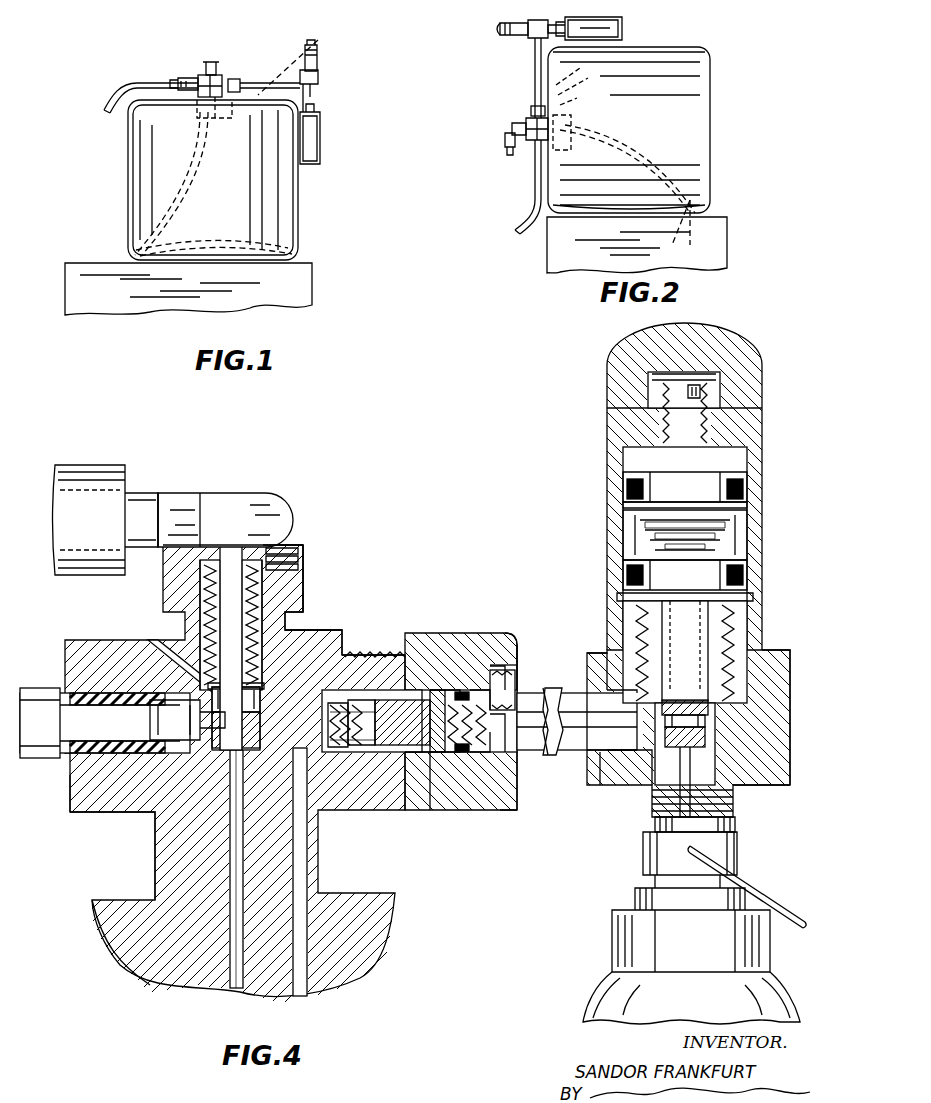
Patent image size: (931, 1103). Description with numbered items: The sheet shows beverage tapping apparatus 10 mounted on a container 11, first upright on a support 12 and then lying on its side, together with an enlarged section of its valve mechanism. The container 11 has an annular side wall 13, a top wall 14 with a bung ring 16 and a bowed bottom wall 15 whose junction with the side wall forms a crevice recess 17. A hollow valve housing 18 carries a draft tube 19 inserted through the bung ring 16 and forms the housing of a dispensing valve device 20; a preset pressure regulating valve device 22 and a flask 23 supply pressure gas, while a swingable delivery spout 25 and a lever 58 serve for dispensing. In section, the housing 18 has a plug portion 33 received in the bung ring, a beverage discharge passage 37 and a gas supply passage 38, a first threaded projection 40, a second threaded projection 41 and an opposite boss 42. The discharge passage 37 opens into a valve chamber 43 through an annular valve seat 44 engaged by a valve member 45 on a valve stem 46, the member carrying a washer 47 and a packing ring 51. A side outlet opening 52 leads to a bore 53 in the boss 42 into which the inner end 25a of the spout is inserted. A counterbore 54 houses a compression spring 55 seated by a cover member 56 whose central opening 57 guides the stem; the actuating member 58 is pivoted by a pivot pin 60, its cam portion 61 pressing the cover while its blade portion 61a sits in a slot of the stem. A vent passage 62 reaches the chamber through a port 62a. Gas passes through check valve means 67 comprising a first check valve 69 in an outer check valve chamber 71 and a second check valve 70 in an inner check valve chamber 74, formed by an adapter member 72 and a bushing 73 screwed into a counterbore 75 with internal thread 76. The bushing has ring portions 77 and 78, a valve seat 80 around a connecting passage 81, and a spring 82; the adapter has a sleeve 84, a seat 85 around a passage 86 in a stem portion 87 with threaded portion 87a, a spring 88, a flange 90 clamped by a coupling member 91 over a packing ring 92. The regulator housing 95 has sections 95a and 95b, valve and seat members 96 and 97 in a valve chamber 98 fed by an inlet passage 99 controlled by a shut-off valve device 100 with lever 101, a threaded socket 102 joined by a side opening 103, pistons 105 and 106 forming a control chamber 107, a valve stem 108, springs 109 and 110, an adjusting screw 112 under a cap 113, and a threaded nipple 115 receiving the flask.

In FIG. 1, the beverage tapping apparatus 10 is at (222, 76).
In FIG. 2, the beverage tapping apparatus 10 is at (527, 122).
In FIG. 4, the beverage tapping apparatus 10 is at (305, 552).
In FIG. 1, the container 11 is at (300, 182).
In FIG. 2, the container 11 is at (668, 50).
In FIG. 1, the support 12 is at (300, 278).
In FIG. 2, the support 12 is at (727, 240).
In FIG. 1, the annular side wall 13 is at (296, 210).
In FIG. 1, the top wall 14 is at (294, 55).
In FIG. 2, the top wall 14 is at (580, 79).
In FIG. 1, the bottom wall 15 is at (232, 250).
In FIG. 1, the bung ring 16 is at (233, 120).
In FIG. 2, the bung ring 16 is at (583, 96).
In FIG. 1, the crevice recess 17 is at (297, 232).
In FIG. 2, the crevice recess 17 is at (688, 229).
In FIG. 1, the valve housing 18 is at (240, 80).
In FIG. 2, the valve housing 18 is at (550, 148).
In FIG. 4, the valve housing 18 is at (362, 650).
In FIG. 1, the draft tube 19 is at (200, 178).
In FIG. 2, the draft tube 19 is at (633, 146).
In FIG. 1, the dispensing valve device 20 is at (199, 82).
In FIG. 2, the dispensing valve device 20 is at (530, 142).
In FIG. 4, the dispensing valve device 20 is at (320, 628).
In FIG. 1, the preset pressure regulating valve device 22 is at (321, 58).
In FIG. 2, the preset pressure regulating valve device 22 is at (512, 22).
In FIG. 4, the preset pressure regulating valve device 22 is at (750, 640).
In FIG. 1, the flask 23 is at (322, 152).
In FIG. 2, the flask 23 is at (612, 18).
In FIG. 4, the flask 23 is at (775, 990).
In FIG. 1, the delivery spout 25 is at (134, 85).
In FIG. 2, the delivery spout 25 is at (515, 222).
In FIG. 4, the delivery spout 25 is at (42, 693).
In FIG. 4, the inner end of delivery spout 25a is at (70, 688).
In FIG. 4, the plug portion 33 is at (108, 945).
In FIG. 4, the beverage discharge passage 37 is at (232, 985).
In FIG. 4, the gas supply passage 38 is at (307, 822).
In FIG. 4, the first threaded projection 40 is at (200, 600).
In FIG. 4, the second threaded projection 41 is at (392, 652).
In FIG. 4, the boss 42 is at (78, 812).
In FIG. 4, the valve chamber 43 is at (320, 626).
In FIG. 4, the annular valve seat 44 is at (243, 760).
In FIG. 4, the valve member 45 is at (258, 712).
In FIG. 4, the valve stem 46 is at (212, 620).
In FIG. 4, the washer 47 is at (150, 728).
In FIG. 4, the packing ring 51 is at (262, 688).
In FIG. 4, the outlet opening 52 is at (220, 762).
In FIG. 4, the bore 53 is at (150, 812).
In FIG. 4, the axial counterbore 54 is at (300, 555).
In FIG. 4, the compression spring 55 is at (300, 575).
In FIG. 4, the cover member 56 is at (300, 595).
In FIG. 4, the central opening 57 is at (304, 545).
In FIG. 1, the actuating member 58 is at (196, 78).
In FIG. 2, the actuating member 58 is at (504, 144).
In FIG. 4, the actuating member 58 is at (92, 466).
In FIG. 4, the pivot pin 60 is at (233, 512).
In FIG. 4, the cam-shaped thrust portion 61 is at (292, 502).
In FIG. 4, the blade portion 61a is at (180, 493).
In FIG. 4, the vent passage 62 is at (105, 692).
In FIG. 4, the port 62a is at (183, 660).
In FIG. 1, the check valve means 67 is at (256, 80).
In FIG. 2, the check valve means 67 is at (530, 108).
In FIG. 4, the check valve means 67 is at (496, 760).
In FIG. 4, the first check valve 69 is at (530, 760).
In FIG. 4, the second check valve 70 is at (395, 748).
In FIG. 4, the outer check valve chamber 71 is at (520, 675).
In FIG. 1, the adapter member 72 is at (318, 76).
In FIG. 2, the adapter member 72 is at (536, 70).
In FIG. 4, the adapter member 72 is at (517, 668).
In FIG. 4, the bushing 73 is at (472, 688).
In FIG. 4, the inner check valve chamber 74 is at (368, 748).
In FIG. 4, the counterbore 75 is at (497, 665).
In FIG. 4, the internal thread 76 is at (436, 688).
In FIG. 4, the large ring portion 77 is at (390, 700).
In FIG. 4, the small ring portion 78 is at (412, 760).
In FIG. 4, the annular valve seat 80 is at (470, 696).
In FIG. 4, the axial connecting passage 81 is at (470, 748).
In FIG. 4, the compression spring 82 is at (338, 748).
In FIG. 4, the cylindrical sleeve 84 is at (436, 752).
In FIG. 4, the annular seat 85 is at (525, 692).
In FIG. 4, the passage 86 is at (596, 765).
In FIG. 4, the stem portion 87 is at (550, 750).
In FIG. 4, the threaded portion 87a is at (610, 765).
In FIG. 4, the compression spring 88 is at (466, 752).
In FIG. 4, the radial annular flange 90 is at (517, 650).
In FIG. 4, the coupling member 91 is at (504, 795).
In FIG. 4, the packing ring 92 is at (510, 665).
In FIG. 4, the housing 95 is at (768, 652).
In FIG. 4, the housing section 95a is at (790, 775).
In FIG. 4, the housing section 95b is at (747, 530).
In FIG. 4, the valve member 96 is at (712, 702).
In FIG. 4, the valve seat member 97 is at (708, 720).
In FIG. 4, the valve chamber 98 is at (708, 740).
In FIG. 4, the inlet passage 99 is at (733, 800).
In FIG. 4, the shut-off valve device 100 is at (730, 852).
In FIG. 4, the actuating lever 101 is at (750, 885).
In FIG. 4, the threaded socket 102 is at (600, 660).
In FIG. 4, the side connecting opening 103 is at (628, 700).
In FIG. 4, the inner piston 105 is at (747, 565).
In FIG. 4, the outer piston 106 is at (747, 482).
In FIG. 4, the control chamber 107 is at (747, 505).
In FIG. 4, the valve stem 108 is at (732, 650).
In FIG. 4, the inner compression spring 109 is at (753, 597).
In FIG. 4, the second compression spring 110 is at (645, 525).
In FIG. 4, the adjusting screw 112 is at (752, 428).
In FIG. 4, the cap 113 is at (752, 373).
In FIG. 4, the threaded nipple 115 is at (665, 800).